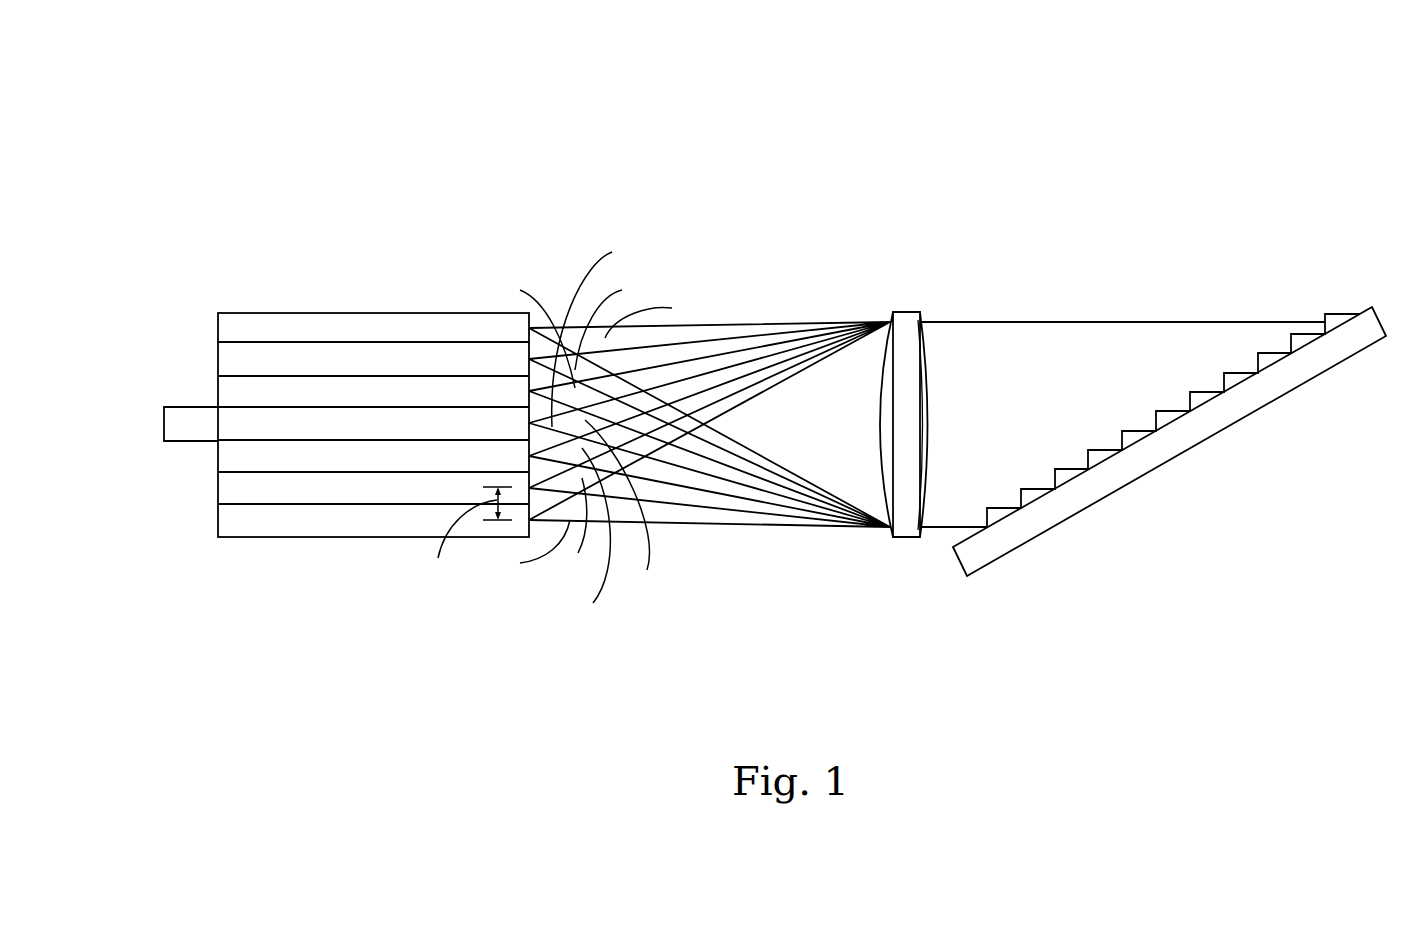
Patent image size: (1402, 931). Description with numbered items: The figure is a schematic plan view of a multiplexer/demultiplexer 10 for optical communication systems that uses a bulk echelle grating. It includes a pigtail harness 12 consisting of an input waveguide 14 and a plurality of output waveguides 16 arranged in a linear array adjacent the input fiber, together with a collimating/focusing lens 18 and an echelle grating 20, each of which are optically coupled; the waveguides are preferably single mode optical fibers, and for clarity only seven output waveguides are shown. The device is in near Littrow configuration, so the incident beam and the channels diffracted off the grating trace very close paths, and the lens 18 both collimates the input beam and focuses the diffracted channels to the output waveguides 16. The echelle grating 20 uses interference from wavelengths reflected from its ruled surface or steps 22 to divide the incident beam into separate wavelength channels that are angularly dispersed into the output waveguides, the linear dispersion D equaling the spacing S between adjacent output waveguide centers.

The multiplexer/demultiplexer 10 is at (800, 146).
The pigtail harness 12 is at (492, 239).
The input waveguide 14 is at (188, 427).
The output waveguides 16 is at (218, 513).
The collimating/focusing lens 18 is at (905, 328).
The echelle grating 20 is at (1232, 403).
The steps 22 is at (1242, 347).